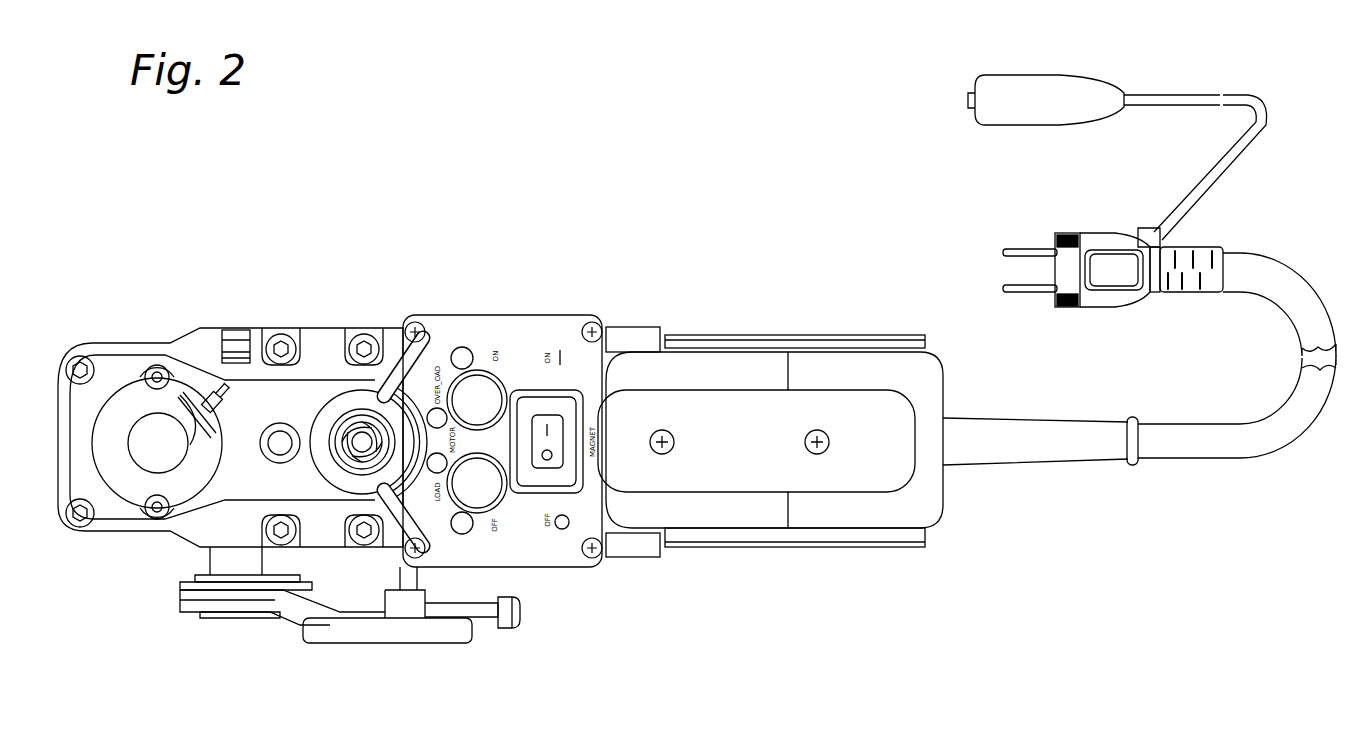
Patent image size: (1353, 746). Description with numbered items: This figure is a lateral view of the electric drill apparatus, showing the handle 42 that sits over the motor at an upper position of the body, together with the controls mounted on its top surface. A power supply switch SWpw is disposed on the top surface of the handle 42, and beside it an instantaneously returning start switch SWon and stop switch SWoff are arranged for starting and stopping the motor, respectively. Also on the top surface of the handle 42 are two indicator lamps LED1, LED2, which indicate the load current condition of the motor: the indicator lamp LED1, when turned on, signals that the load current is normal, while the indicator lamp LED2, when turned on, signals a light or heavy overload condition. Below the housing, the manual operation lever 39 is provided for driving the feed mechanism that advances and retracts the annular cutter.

The indicator lamp LED2 is at (438, 407).
The indicator lamp LED1 is at (441, 472).
The start switch SWon is at (478, 398).
The stop switch SWoff is at (480, 485).
The power supply switch SWpw is at (557, 440).
The handle 42 is at (730, 473).
The manual operation lever 39 is at (373, 637).